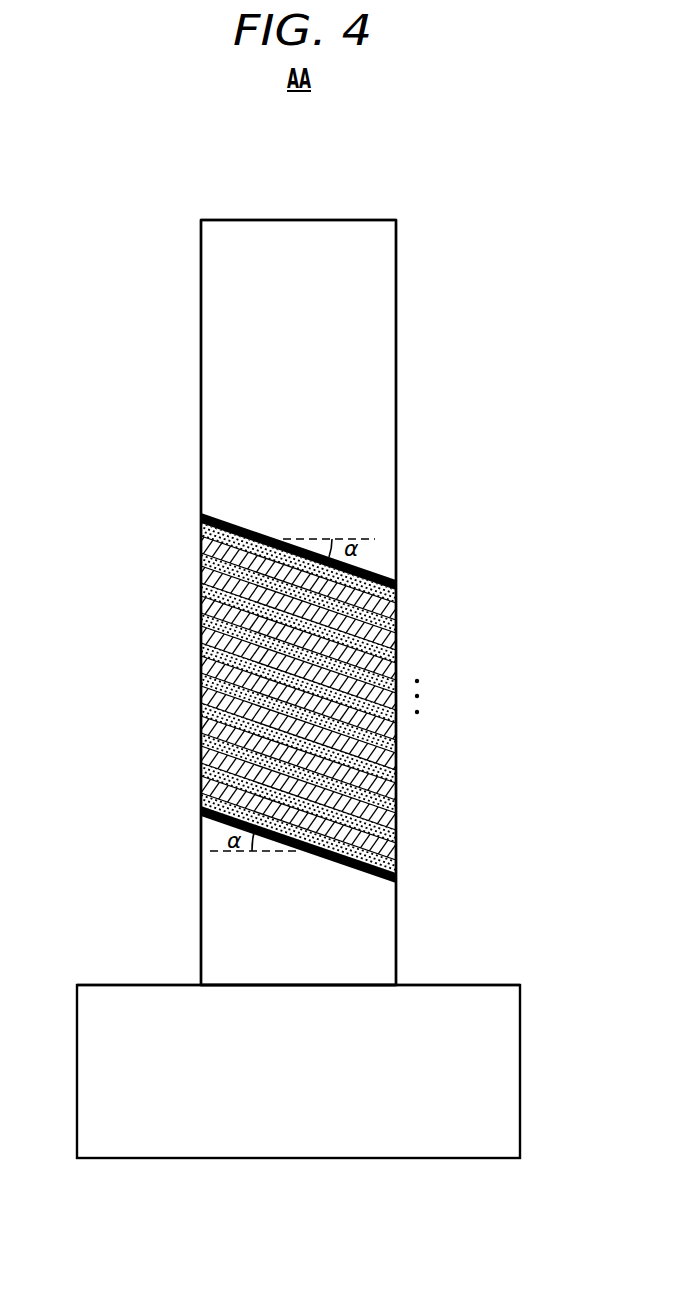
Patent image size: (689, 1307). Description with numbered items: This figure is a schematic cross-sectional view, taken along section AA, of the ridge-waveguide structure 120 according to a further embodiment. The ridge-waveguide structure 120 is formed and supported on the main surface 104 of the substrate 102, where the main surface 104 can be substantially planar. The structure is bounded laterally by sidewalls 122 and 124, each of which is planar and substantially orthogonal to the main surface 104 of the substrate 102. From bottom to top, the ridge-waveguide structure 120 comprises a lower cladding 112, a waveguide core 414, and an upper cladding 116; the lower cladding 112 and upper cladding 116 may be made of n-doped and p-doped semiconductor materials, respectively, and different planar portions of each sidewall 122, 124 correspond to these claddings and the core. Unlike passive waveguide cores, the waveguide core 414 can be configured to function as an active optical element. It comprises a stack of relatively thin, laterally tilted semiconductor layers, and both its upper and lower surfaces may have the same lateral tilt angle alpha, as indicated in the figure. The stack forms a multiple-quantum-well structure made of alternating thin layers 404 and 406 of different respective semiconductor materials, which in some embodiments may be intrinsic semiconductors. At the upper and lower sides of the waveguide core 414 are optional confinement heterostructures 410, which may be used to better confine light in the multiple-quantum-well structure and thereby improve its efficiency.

The substrate 102 is at (512, 1073).
The main surface 104 is at (467, 978).
The lower cladding 112 is at (220, 918).
The upper cladding 116 is at (220, 355).
The ridge-waveguide structure 120 is at (299, 194).
The sidewall 122 is at (191, 285).
The sidewall 124 is at (406, 285).
The layer 404 is at (341, 714).
The layer 406 is at (337, 705).
The confinement heterostructure 410 is at (188, 519).
The waveguide core 414 is at (337, 708).